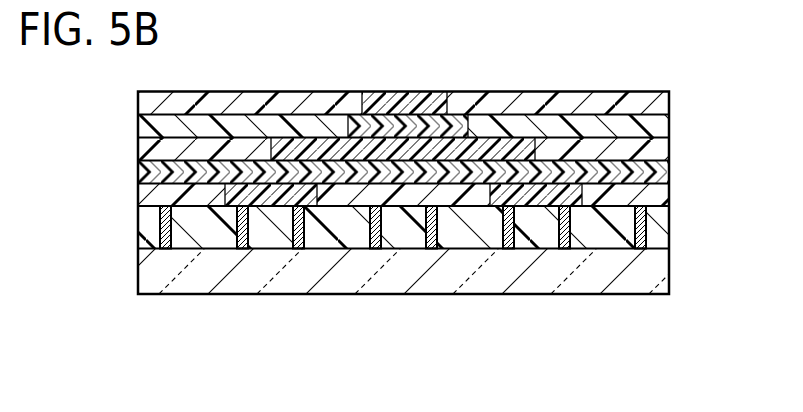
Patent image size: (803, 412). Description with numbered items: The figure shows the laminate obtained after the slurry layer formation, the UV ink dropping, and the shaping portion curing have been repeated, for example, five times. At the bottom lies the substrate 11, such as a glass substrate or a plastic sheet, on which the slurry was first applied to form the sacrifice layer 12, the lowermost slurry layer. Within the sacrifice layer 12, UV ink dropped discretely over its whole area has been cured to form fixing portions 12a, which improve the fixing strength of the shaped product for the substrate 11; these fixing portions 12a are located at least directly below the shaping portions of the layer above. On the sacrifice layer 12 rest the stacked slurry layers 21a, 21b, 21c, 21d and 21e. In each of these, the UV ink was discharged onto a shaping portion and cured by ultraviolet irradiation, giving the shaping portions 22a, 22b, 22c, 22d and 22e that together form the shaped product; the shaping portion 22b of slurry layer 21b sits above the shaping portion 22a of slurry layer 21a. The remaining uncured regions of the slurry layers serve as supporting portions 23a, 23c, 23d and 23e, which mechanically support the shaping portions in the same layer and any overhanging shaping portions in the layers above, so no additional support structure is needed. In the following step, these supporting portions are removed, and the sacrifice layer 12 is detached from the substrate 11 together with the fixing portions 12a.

The substrate 11 is at (666, 271).
The sacrifice layer 12 is at (407, 229).
The fixing portion 12a is at (161, 238).
The slurry layer 21a is at (402, 257).
The slurry layer 21b is at (661, 167).
The slurry layer 21c is at (402, 107).
The slurry layer 21d is at (402, 86).
The slurry layer 21e is at (402, 65).
The shaping portion 22a is at (257, 208).
The shaping portion 22b is at (455, 174).
The shaping portion 22c is at (534, 145).
The shaping portion 22d is at (457, 122).
The shaping portion 22e is at (387, 100).
The supporting portion 23a is at (141, 193).
The supporting portion 23c is at (141, 146).
The supporting portion 23d is at (141, 123).
The supporting portion 23e is at (141, 99).